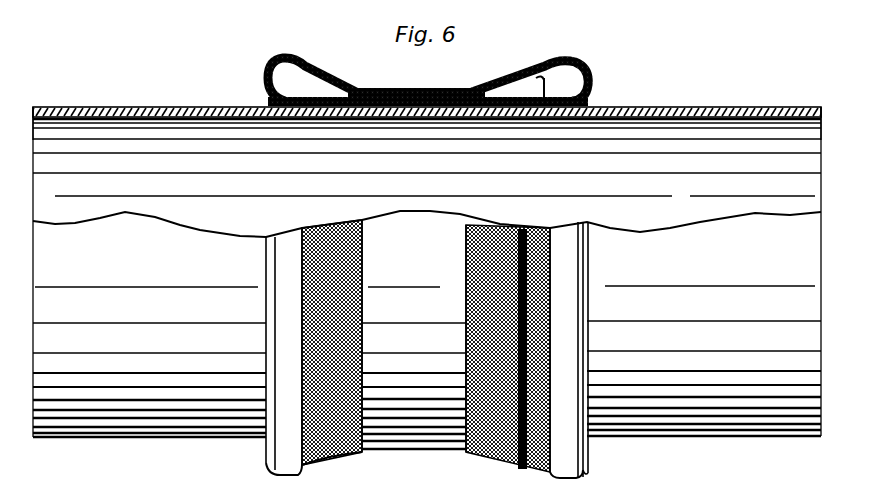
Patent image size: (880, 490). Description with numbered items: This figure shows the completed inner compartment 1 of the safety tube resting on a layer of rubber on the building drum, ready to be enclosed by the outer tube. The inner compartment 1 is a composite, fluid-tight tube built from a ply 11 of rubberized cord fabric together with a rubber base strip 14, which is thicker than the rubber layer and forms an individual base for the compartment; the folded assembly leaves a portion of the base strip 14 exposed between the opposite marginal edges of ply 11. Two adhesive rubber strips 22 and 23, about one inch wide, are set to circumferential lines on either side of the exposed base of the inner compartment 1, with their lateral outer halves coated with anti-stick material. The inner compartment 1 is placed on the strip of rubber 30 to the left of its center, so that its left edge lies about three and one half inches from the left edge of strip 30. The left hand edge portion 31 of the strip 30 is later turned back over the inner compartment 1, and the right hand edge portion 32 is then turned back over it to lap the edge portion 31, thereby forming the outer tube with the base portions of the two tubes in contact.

The inner compartment 1 is at (444, 65).
The ply of rubberized cord fabric 11 is at (355, 88).
The rubber base strip 14 is at (403, 90).
The adhesive rubber strip 22 is at (291, 57).
The adhesive rubber strip 23 is at (562, 61).
The strip of rubber 30 is at (722, 107).
The left hand edge portion 31 is at (36, 105).
The right hand edge portion 32 is at (821, 105).